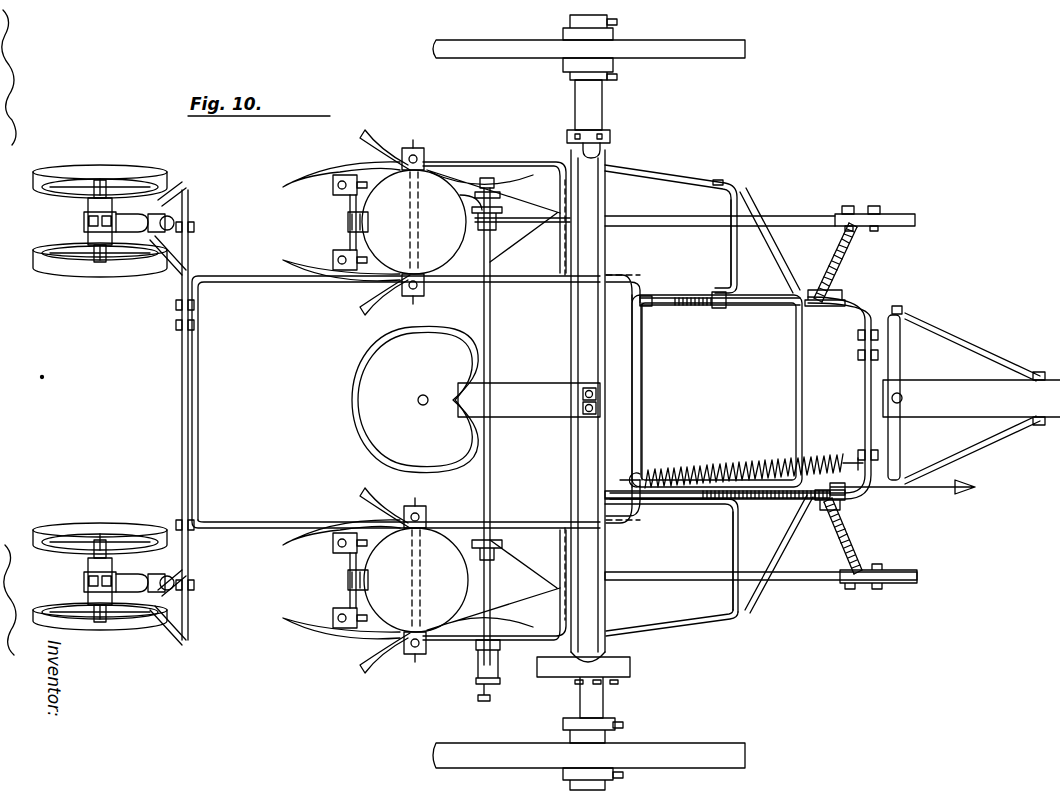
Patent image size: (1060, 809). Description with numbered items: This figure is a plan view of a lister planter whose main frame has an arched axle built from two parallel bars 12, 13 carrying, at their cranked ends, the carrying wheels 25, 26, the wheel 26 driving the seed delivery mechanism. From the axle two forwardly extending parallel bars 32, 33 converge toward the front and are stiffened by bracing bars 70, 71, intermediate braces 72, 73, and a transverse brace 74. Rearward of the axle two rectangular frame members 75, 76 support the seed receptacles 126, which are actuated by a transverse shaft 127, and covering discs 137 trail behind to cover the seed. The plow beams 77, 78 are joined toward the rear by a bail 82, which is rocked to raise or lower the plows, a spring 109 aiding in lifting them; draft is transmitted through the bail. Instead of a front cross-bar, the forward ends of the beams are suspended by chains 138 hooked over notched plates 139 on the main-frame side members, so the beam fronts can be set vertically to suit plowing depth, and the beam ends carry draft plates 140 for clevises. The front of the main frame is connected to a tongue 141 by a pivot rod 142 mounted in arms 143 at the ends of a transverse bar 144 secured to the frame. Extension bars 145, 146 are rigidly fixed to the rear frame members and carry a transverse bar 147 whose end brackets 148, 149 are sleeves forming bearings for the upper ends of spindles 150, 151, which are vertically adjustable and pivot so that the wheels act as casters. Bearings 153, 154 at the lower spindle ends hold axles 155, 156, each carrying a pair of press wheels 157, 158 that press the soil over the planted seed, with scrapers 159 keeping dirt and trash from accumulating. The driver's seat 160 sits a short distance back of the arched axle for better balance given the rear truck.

The parallel bar 12 is at (570, 369).
The parallel bar 13 is at (608, 378).
The carrying wheel 25 is at (746, 50).
The carrying wheel 26 is at (430, 757).
The forwardly extending parallel bar 32 is at (688, 298).
The forwardly extending parallel bar 33 is at (696, 510).
The bracing bar 70 is at (695, 184).
The bracing bar 71 is at (672, 626).
The intermediate brace 72 is at (730, 258).
The intermediate brace 73 is at (733, 562).
The transverse brace 74 is at (797, 380).
The rectangular frame member 75 is at (470, 158).
The rectangular frame member 76 is at (450, 640).
The plow beam 77 is at (662, 226).
The plow beam 78 is at (670, 578).
The bail 82 is at (645, 404).
The spring 109 is at (770, 470).
The seed receptacle 126 is at (385, 235).
The transverse shaft 127 is at (492, 492).
The covering disc 137 is at (330, 180).
The chain 138 is at (840, 262).
The notched plate 139 is at (840, 285).
The draft plate 140 is at (925, 198).
The tongue 141 is at (960, 380).
The pivot rod 142 is at (905, 312).
The arm 143 is at (905, 300).
The transverse bar 144 is at (862, 398).
The extension bar 145 is at (245, 262).
The extension bar 146 is at (262, 524).
The transverse bar 147 is at (182, 425).
The bracket 148 is at (165, 215).
The bracket 149 is at (165, 576).
The spindle 150 is at (174, 226).
The spindle 151 is at (174, 588).
The bearing 153 is at (85, 210).
The bearing 154 is at (85, 575).
The axle 155 is at (108, 170).
The axle 156 is at (108, 525).
The press wheel 157 is at (70, 150).
The press wheel 158 is at (55, 530).
The scraper 159 is at (180, 178).
The driver's seat 160 is at (350, 404).